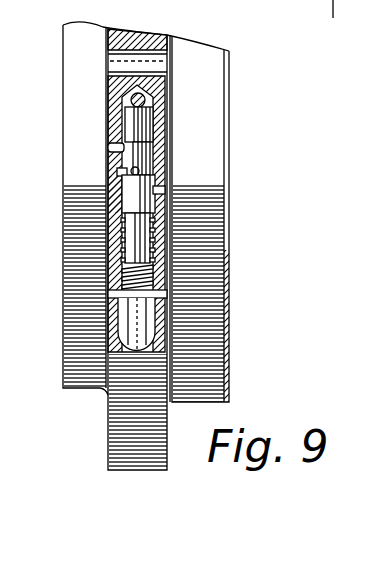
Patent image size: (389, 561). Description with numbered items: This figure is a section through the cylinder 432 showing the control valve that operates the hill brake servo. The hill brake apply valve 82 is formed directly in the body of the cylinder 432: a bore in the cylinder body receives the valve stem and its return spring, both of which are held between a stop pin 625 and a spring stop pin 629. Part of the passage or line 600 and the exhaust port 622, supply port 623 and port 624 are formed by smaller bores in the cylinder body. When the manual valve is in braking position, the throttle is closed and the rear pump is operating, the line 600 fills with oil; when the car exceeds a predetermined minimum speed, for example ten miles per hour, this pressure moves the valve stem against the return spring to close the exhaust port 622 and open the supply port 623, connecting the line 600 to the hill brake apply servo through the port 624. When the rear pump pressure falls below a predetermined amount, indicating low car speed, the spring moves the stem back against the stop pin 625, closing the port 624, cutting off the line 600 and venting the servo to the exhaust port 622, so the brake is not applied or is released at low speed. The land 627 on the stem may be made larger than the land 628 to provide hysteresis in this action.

The line 600 is at (150, 103).
The stop pin 625 is at (130, 101).
The land 628 is at (136, 128).
The exhaust port 622 is at (108, 147).
The port 624 is at (117, 176).
The supply port 623 is at (167, 192).
The land 627 is at (120, 196).
The hill brake apply valve 82 is at (118, 206).
The spring stop pin 629 is at (76, 298).
The cylinder 432 is at (228, 251).